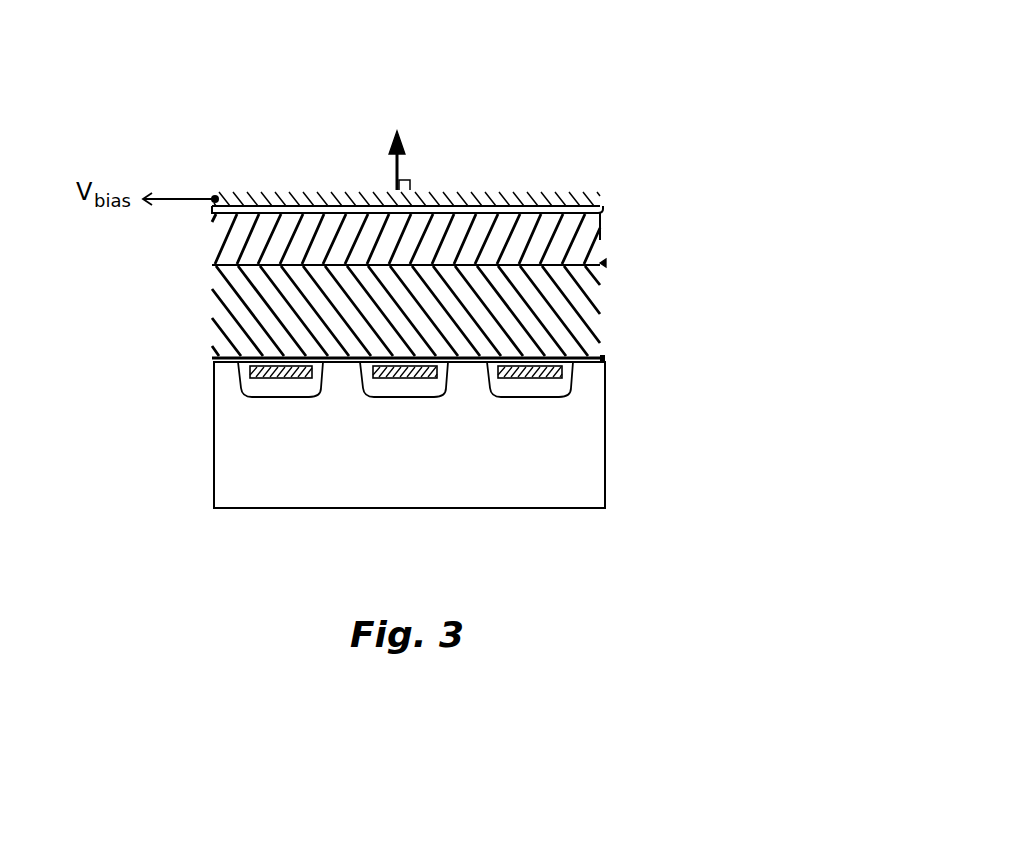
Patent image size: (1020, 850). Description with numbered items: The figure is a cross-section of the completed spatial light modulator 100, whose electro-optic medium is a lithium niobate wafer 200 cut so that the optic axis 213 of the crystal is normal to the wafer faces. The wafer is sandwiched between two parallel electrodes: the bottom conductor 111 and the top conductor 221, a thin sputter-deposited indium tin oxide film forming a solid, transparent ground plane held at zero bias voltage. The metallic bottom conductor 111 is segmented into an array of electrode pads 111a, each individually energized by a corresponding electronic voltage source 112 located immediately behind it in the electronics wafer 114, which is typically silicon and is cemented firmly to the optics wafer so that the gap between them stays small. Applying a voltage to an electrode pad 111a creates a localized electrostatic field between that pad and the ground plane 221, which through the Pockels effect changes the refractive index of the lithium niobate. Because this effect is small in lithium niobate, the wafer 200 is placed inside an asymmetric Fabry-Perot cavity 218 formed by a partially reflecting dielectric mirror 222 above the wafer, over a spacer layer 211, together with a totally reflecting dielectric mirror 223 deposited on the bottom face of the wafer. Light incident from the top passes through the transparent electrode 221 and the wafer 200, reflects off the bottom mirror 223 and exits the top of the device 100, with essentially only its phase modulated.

The spatial light modulator 100 is at (487, 128).
The optic axis 213 is at (419, 160).
The top conductor 221 is at (593, 195).
The partially reflecting dielectric mirror 222 is at (597, 208).
The spacer layer 211 is at (597, 238).
The lithium niobate wafer 200 is at (600, 308).
The Fabry-Perot cavity 218 is at (213, 294).
The totally reflecting dielectric mirror 223 is at (603, 358).
The electronics wafer 114 is at (583, 468).
The bottom conductor 111 is at (238, 378).
The electronic voltage source 112 is at (298, 388).
The electrode pad 111a is at (562, 368).